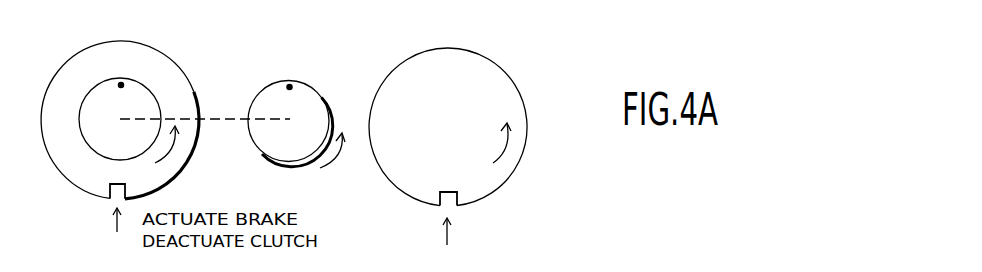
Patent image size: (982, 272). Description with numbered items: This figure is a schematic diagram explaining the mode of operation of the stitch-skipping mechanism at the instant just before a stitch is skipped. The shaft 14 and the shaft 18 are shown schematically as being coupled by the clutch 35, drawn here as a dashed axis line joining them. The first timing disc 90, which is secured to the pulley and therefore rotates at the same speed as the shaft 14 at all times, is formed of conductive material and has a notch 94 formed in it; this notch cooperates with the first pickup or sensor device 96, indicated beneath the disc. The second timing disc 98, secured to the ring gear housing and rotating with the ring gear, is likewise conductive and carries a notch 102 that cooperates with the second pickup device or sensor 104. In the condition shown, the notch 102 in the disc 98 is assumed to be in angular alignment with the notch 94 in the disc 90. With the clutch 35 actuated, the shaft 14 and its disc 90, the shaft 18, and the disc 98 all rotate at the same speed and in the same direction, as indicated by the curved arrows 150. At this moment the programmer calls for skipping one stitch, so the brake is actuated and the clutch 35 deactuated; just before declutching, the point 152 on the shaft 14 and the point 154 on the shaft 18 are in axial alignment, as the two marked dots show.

The shaft 14 is at (140, 94).
The shaft 18 is at (313, 102).
The clutch 35 is at (217, 117).
The first timing disc 90 is at (178, 79).
The notch 94 is at (113, 185).
The first pickup or sensor device 96 is at (70, 229).
The second timing disc 98 is at (498, 70).
The notch 102 is at (448, 192).
The second pickup device or sensor 104 is at (504, 236).
The arrows 150 is at (168, 152).
The point 152 is at (121, 85).
The point 154 is at (290, 87).